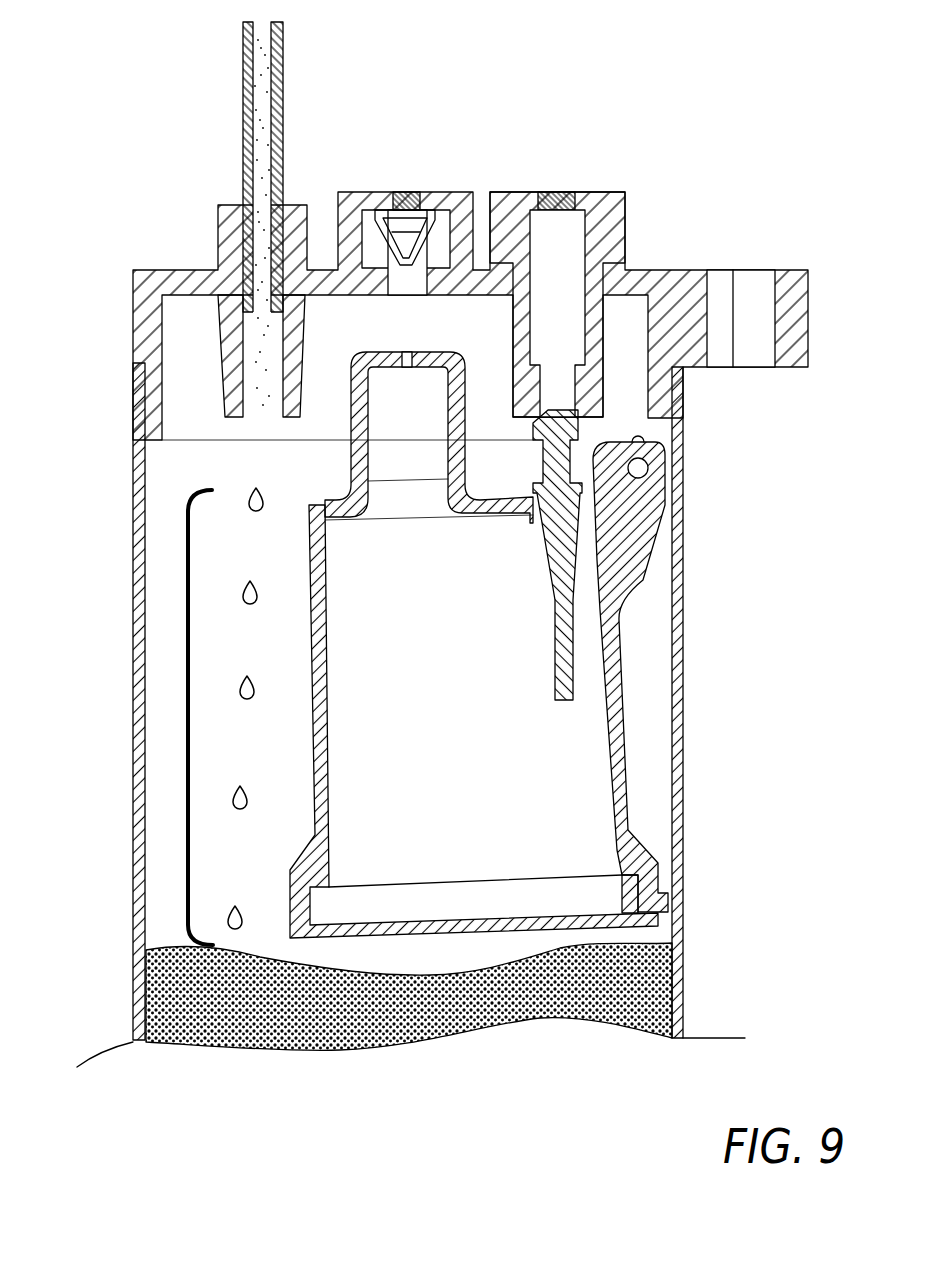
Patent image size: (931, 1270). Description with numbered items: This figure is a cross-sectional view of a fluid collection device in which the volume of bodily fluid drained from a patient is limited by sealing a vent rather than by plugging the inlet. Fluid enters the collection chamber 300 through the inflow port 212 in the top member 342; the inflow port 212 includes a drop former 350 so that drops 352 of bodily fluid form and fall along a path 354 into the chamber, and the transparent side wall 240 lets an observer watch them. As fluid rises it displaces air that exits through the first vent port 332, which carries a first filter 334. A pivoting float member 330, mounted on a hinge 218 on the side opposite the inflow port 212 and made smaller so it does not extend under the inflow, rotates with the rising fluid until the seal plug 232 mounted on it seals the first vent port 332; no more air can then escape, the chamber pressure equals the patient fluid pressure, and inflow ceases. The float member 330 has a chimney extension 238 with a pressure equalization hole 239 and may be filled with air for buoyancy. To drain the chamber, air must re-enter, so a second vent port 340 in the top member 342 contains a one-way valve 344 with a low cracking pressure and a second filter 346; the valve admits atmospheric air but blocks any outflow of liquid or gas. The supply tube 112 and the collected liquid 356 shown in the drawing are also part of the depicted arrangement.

The supply tube 112 is at (243, 98).
The inflow port 212 is at (220, 390).
The hinge 218 is at (603, 442).
The seal plug 232 is at (555, 512).
The chimney extension 238 is at (385, 470).
The pressure equalization hole 239 is at (405, 353).
The side wall 240 is at (133, 880).
The collection chamber 300 is at (718, 597).
The float member 330 is at (583, 780).
The first vent port 332 is at (558, 392).
The first filter 334 is at (563, 192).
The second vent port 340 is at (413, 275).
The top member 342 is at (155, 268).
The one-way valve 344 is at (408, 232).
The second filter 346 is at (397, 192).
The drop former 350 is at (263, 412).
The drops 352 is at (235, 800).
The path 354 is at (183, 712).
The collected liquid 356 is at (160, 1005).